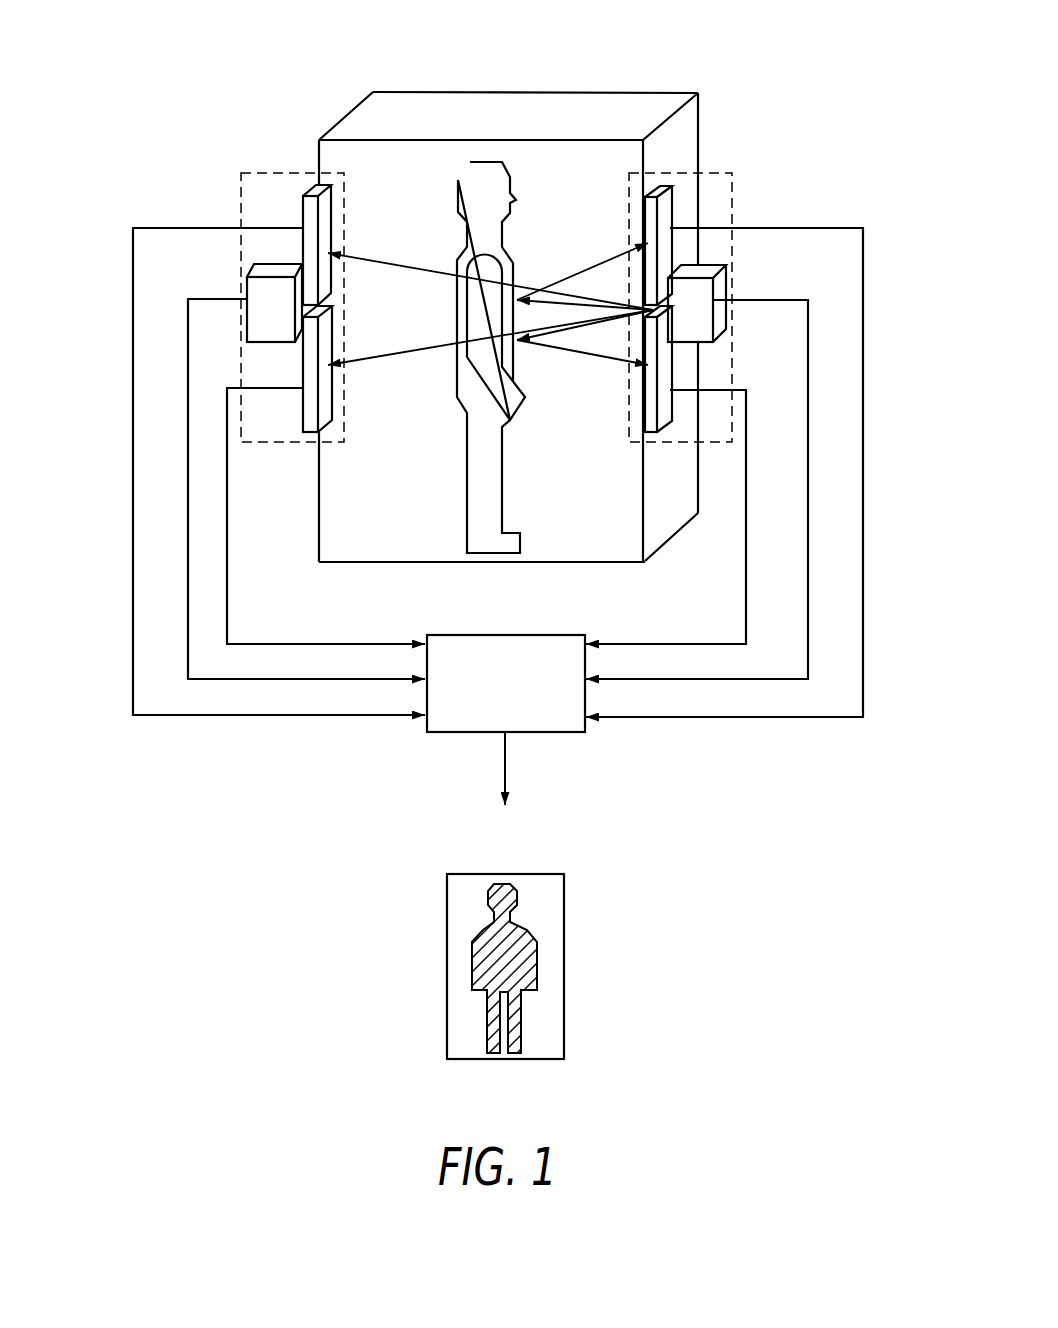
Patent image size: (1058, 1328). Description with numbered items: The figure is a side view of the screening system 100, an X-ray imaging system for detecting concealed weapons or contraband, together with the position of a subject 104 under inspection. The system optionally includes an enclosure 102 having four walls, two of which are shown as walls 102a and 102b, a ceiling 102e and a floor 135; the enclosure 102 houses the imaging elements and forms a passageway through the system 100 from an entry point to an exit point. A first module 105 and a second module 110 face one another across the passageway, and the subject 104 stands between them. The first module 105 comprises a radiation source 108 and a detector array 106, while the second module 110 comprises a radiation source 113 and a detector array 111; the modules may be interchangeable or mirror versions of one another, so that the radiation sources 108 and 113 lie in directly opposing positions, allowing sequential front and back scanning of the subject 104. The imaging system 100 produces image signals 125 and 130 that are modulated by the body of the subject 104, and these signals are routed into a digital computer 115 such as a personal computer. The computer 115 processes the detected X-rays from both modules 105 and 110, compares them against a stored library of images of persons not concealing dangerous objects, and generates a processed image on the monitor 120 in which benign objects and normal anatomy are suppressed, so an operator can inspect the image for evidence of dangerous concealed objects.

The screening system 100 is at (307, 88).
The enclosure 102 is at (640, 100).
The wall of enclosure 102a is at (332, 160).
The wall of enclosure 102b is at (690, 150).
The ceiling 102e is at (492, 110).
The subject 104 is at (493, 168).
The first module 105 is at (713, 172).
The detector array 106 is at (672, 215).
The radiation source 108 is at (723, 285).
The second module 110 is at (237, 197).
The detector array 111 is at (308, 220).
The radiation source 113 is at (262, 293).
The computer processor 115 is at (421, 727).
The monitor 120 is at (566, 952).
The image signals 125 is at (746, 537).
The image signals 130 is at (133, 496).
The floor 135 is at (382, 563).